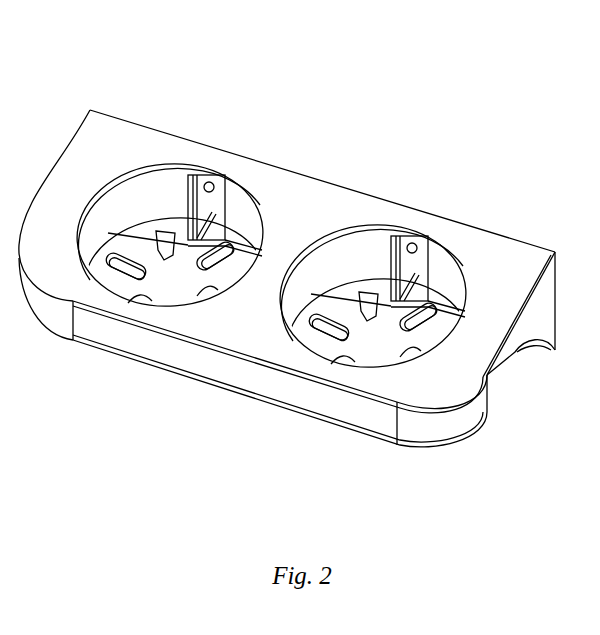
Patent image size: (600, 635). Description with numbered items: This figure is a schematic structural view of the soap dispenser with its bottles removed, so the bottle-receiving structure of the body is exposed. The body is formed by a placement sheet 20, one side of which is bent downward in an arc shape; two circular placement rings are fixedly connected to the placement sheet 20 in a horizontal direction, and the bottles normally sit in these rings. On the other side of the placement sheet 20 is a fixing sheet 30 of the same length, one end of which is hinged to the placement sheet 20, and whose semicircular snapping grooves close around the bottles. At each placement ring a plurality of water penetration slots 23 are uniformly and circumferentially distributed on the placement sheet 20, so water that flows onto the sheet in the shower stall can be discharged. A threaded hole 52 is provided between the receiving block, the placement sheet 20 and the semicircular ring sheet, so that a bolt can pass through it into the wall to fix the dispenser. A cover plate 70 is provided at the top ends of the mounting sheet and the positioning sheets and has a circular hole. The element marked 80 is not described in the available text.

The cover plate 70 is at (128, 143).
The fixing sheet 30 is at (255, 383).
The retaining hook 80 is at (517, 347).
The placement sheet 20 is at (387, 323).
The water penetration slots 23 is at (335, 337).
The threaded hole 52 is at (422, 242).